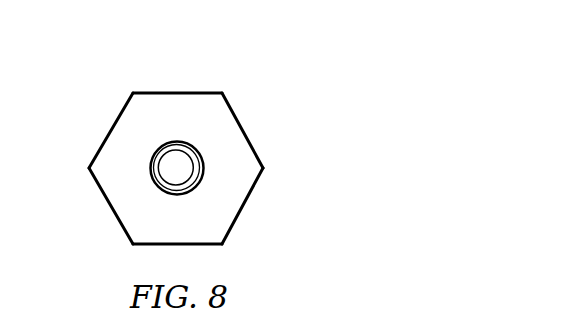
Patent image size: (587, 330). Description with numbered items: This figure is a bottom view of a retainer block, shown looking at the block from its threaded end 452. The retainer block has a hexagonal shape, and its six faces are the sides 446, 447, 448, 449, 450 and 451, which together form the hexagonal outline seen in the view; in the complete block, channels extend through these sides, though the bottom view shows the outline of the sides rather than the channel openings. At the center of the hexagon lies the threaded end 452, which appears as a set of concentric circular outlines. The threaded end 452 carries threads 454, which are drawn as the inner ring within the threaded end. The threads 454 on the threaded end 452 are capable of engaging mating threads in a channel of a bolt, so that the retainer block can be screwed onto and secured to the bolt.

The side 446 is at (110, 128).
The side 447 is at (177, 93).
The side 448 is at (243, 132).
The side 449 is at (243, 205).
The side 450 is at (197, 244).
The side 451 is at (113, 210).
The threaded end 452 is at (173, 165).
The threads 454 is at (195, 152).